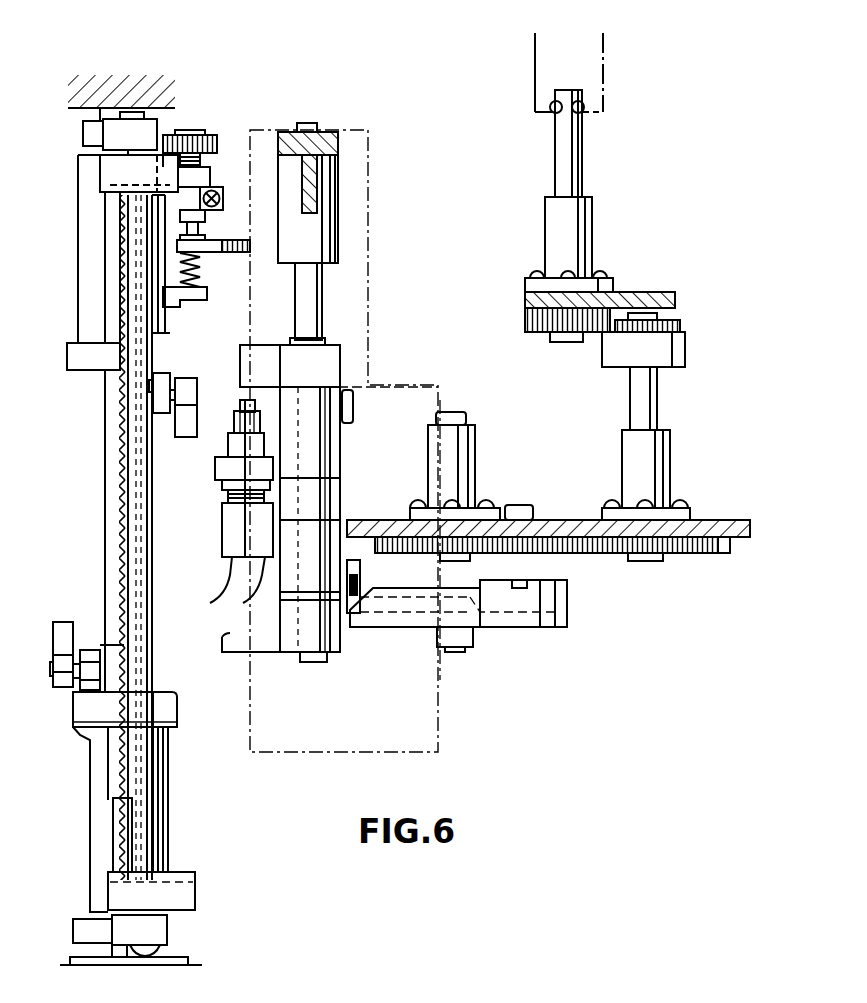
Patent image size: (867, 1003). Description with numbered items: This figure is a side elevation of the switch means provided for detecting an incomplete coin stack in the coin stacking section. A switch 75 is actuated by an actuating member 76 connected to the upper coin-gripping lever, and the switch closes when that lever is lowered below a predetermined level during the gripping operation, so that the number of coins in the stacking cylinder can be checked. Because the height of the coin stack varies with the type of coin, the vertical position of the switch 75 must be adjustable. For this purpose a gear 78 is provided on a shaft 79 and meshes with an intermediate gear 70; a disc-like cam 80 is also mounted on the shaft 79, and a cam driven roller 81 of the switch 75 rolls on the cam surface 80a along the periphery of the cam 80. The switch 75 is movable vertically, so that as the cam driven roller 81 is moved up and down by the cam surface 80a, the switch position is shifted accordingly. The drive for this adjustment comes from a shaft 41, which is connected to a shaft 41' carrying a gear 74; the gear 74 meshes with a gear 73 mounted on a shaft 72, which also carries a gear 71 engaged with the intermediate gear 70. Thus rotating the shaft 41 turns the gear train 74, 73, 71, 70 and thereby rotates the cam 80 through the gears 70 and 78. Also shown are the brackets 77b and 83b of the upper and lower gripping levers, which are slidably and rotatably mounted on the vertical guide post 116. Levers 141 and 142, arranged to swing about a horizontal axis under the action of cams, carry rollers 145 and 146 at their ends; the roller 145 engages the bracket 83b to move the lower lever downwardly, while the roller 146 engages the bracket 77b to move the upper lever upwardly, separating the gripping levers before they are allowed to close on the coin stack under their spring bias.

The shaft 41 is at (542, 72).
The shaft 41' is at (551, 184).
The intermediate gear 70 is at (575, 553).
The gear 71 is at (700, 553).
The shaft 72 is at (657, 395).
The gear 73 is at (680, 322).
The gear 74 is at (537, 332).
The switch 75 is at (230, 526).
The actuating member 76 is at (232, 257).
The bracket 77b is at (92, 358).
The gear 78 is at (368, 520).
The shaft 79 is at (430, 568).
The disc-like cam 80 is at (498, 620).
The cam surface 80a is at (396, 600).
The cam driven roller 81 is at (354, 615).
The bracket 83b is at (168, 780).
The vertical guide post 116 is at (110, 447).
The lever 141 is at (63, 622).
The lever 142 is at (188, 437).
The roller 145 is at (90, 650).
The roller 146 is at (160, 413).